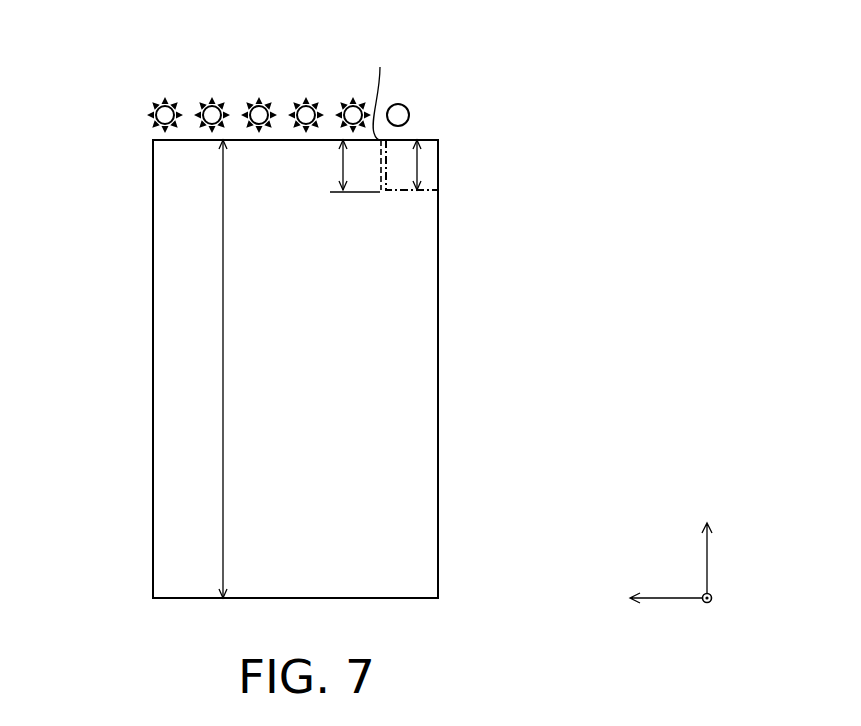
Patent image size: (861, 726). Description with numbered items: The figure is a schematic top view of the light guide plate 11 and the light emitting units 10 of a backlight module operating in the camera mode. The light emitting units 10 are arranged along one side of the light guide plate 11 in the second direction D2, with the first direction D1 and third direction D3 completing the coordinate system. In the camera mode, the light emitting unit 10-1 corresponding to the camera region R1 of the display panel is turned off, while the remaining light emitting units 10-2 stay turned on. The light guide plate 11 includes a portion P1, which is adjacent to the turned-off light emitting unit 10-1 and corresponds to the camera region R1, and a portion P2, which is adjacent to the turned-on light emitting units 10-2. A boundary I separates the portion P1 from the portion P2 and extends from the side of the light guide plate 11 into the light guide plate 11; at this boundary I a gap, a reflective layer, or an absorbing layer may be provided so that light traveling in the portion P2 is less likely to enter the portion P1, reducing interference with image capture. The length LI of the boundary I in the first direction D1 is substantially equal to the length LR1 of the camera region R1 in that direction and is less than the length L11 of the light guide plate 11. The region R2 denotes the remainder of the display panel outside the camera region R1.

The light emitting units 10 is at (291, 80).
The light emitting unit 10-2 is at (337, 79).
The light emitting unit 10-1 is at (417, 99).
The light guide plate 11 is at (88, 160).
The portion P2 is at (170, 177).
The portion P1 is at (392, 192).
The boundary I is at (377, 114).
The camera region R1 is at (440, 146).
The length of the camera region LR1 is at (420, 167).
The length of the boundary LI is at (340, 167).
The region R2 is at (438, 268).
The length of the light guide plate L11 is at (223, 392).
The first direction D1 is at (705, 538).
The second direction D2 is at (647, 601).
The third direction D3 is at (723, 615).